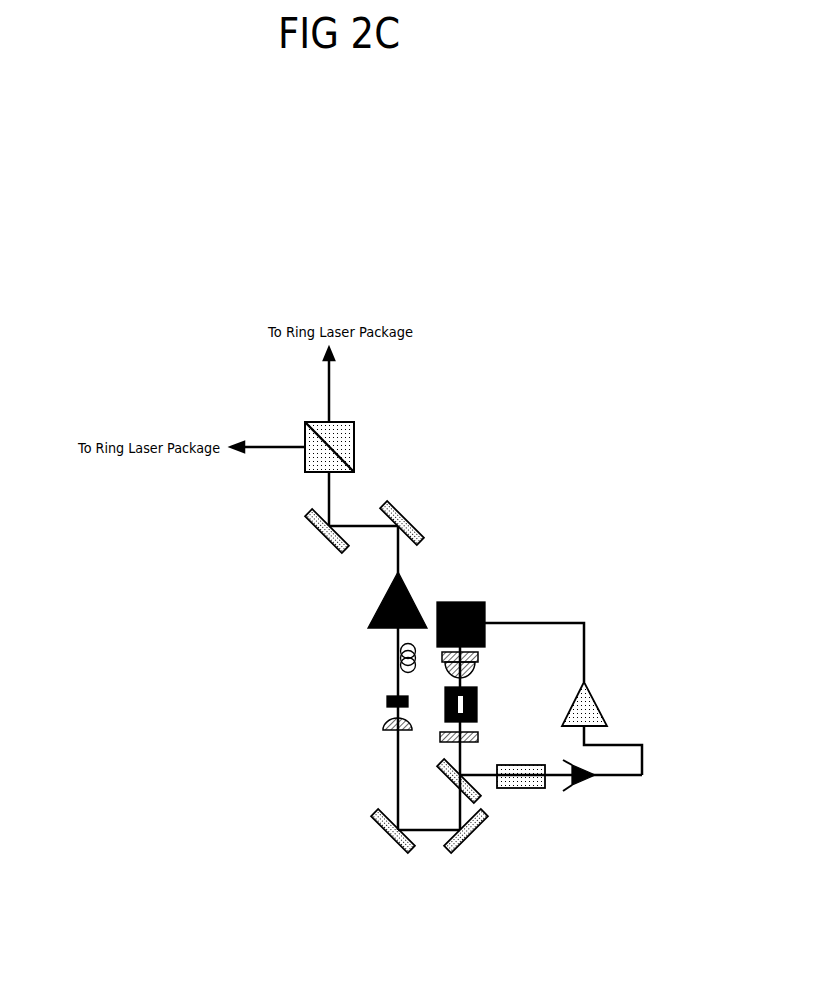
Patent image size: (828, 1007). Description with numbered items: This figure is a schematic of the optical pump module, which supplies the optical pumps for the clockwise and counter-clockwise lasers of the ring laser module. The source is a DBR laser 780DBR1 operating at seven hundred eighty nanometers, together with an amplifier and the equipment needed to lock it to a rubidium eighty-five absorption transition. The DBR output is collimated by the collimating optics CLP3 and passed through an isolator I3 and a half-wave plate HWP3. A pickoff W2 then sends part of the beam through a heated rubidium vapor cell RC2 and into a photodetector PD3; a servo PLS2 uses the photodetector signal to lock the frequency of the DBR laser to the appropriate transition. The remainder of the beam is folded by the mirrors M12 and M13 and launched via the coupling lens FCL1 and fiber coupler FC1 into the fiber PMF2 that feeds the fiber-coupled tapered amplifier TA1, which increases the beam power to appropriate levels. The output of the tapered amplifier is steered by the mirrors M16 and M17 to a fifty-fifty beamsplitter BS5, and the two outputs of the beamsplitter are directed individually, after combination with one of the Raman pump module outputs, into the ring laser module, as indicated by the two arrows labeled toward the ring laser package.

The 50/50 beamsplitter BS5 is at (331, 439).
The mirror M17 is at (324, 534).
The mirror M16 is at (408, 530).
The fiber-coupled tapered amplifier TA1 is at (389, 600).
The 780 nm DBR laser 780DBR1 is at (465, 616).
The polarization maintaining fiber PMF2 is at (387, 658).
The fiber coupler FC1 is at (380, 703).
The fiber coupling lens FCL1 is at (380, 727).
The collimating lens package CLP3 is at (478, 665).
The optical isolator I3 is at (471, 704).
The half wave plate HWP3 is at (480, 741).
The servo PLS2 is at (572, 704).
The wedge / beam sampler W2 is at (454, 781).
The heated rubidium vapor cell RC2 is at (521, 787).
The photodetector PD3 is at (579, 785).
The mirror M13 is at (393, 840).
The mirror M12 is at (466, 840).